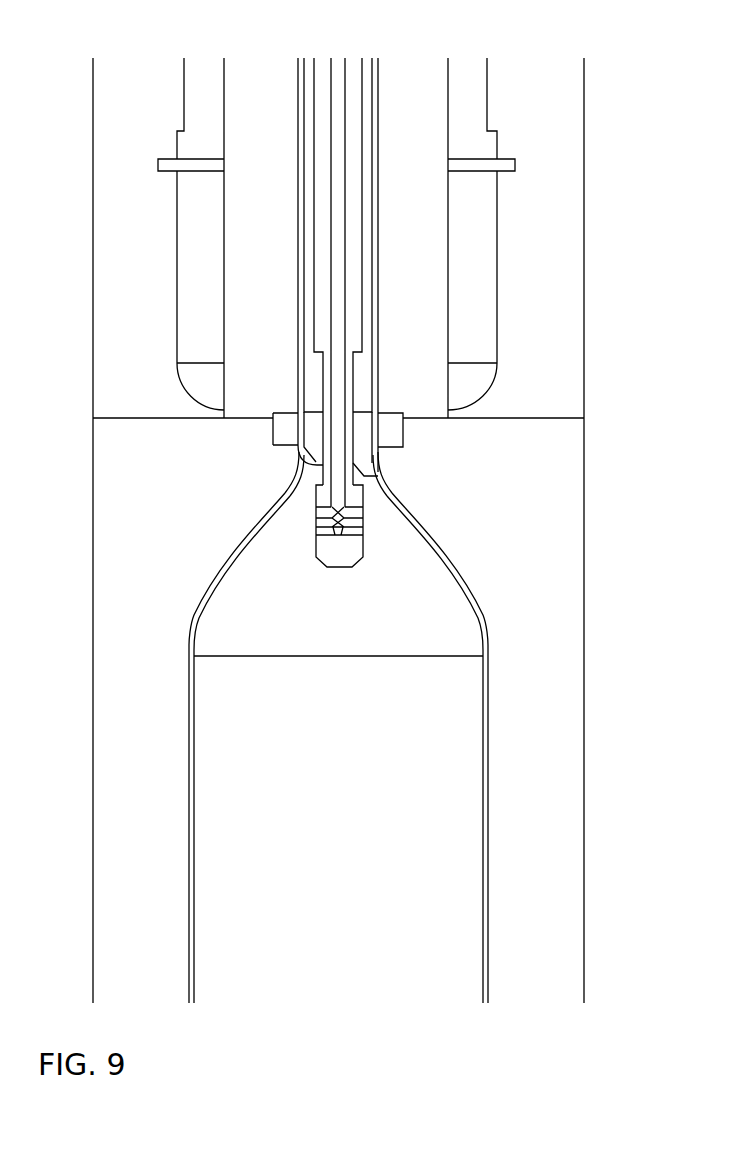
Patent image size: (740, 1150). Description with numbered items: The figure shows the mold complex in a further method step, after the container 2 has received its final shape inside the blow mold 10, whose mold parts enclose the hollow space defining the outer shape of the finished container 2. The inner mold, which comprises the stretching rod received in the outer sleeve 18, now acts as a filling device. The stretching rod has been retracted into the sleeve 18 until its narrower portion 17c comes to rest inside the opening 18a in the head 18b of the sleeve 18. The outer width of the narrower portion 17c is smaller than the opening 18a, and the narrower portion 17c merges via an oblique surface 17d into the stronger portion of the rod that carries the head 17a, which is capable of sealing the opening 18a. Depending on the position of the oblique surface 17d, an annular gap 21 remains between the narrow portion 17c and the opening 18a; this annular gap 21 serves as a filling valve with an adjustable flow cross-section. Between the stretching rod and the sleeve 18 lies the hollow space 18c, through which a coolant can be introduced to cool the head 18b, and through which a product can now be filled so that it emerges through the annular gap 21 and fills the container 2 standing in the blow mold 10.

The container 2 is at (418, 727).
The blow mold 10 is at (573, 720).
The head 17a is at (357, 551).
The narrower portion 17c is at (329, 370).
The oblique surface 17d is at (362, 472).
The outer sleeve 18 is at (378, 275).
The opening 18a is at (300, 448).
The head 18b is at (372, 432).
The hollow space 18c is at (306, 58).
The annular gap 21 is at (288, 496).